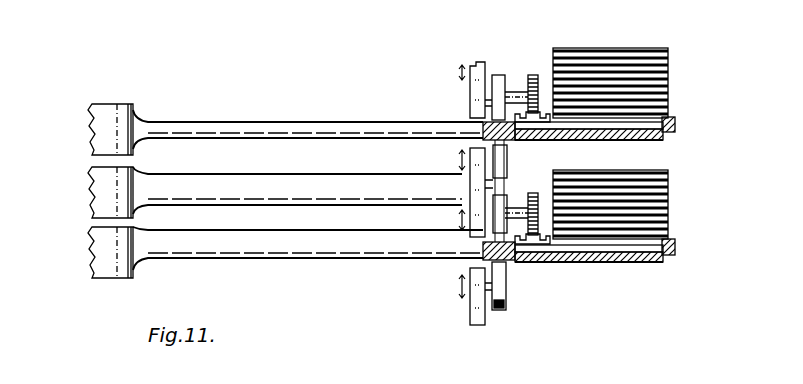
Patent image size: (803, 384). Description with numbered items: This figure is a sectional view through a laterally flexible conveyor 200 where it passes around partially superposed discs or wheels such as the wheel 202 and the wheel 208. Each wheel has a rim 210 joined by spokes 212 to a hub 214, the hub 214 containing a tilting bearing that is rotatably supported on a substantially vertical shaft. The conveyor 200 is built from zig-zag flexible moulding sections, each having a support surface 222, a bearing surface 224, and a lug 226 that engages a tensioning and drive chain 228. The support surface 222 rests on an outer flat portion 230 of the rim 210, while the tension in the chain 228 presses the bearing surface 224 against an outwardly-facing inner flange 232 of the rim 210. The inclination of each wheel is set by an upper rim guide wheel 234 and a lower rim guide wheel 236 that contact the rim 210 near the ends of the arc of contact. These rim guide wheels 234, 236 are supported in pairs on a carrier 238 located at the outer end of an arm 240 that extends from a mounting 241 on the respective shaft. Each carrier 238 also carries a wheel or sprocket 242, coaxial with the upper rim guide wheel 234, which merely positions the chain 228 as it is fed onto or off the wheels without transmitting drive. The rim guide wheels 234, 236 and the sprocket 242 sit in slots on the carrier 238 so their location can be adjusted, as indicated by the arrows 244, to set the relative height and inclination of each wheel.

The laterally flexible conveyor 200 is at (684, 120).
The disc or wheel 202 is at (355, 142).
The disc or wheel 208 is at (398, 286).
The rim 210 is at (624, 144).
The spokes 212 is at (222, 126).
The hub 214 is at (110, 111).
The support surface 222 is at (668, 133).
The bearing surface 224 is at (515, 92).
The lug 226 is at (558, 136).
The tensioning and drive chain 228 is at (549, 111).
The outer flat portion 230 is at (625, 128).
The inner flange 232 is at (516, 139).
The upper rim guide wheel 234 is at (497, 75).
The lower rim guide wheel 236 is at (496, 152).
The carrier 238 is at (472, 65).
The central shaft 240 is at (222, 188).
The mounting 241 is at (100, 192).
The wheel or sprocket 242 is at (534, 75).
The arrows 244 is at (458, 72).